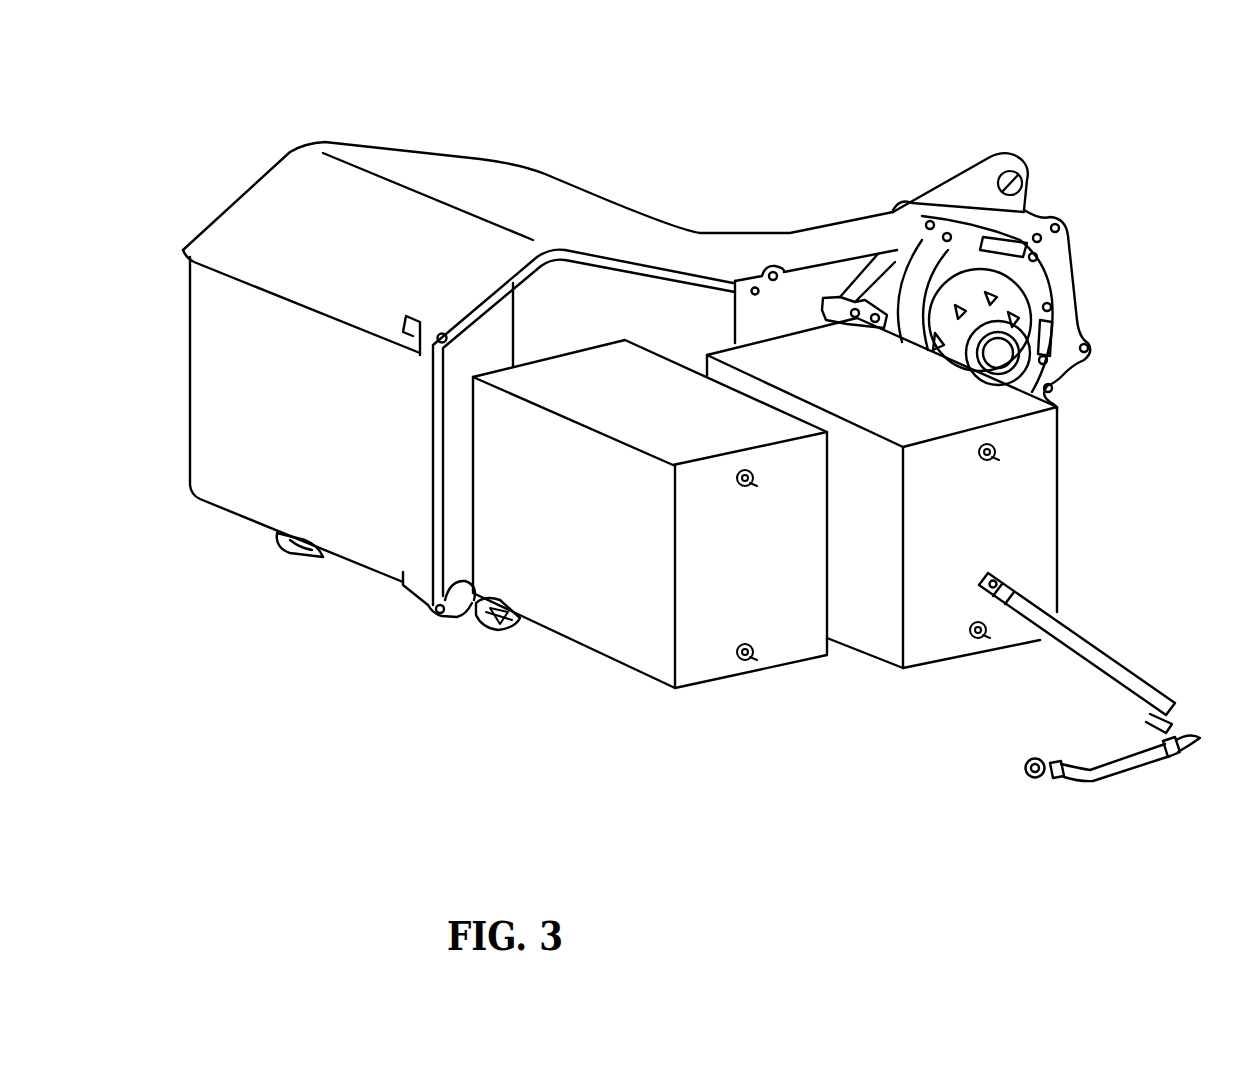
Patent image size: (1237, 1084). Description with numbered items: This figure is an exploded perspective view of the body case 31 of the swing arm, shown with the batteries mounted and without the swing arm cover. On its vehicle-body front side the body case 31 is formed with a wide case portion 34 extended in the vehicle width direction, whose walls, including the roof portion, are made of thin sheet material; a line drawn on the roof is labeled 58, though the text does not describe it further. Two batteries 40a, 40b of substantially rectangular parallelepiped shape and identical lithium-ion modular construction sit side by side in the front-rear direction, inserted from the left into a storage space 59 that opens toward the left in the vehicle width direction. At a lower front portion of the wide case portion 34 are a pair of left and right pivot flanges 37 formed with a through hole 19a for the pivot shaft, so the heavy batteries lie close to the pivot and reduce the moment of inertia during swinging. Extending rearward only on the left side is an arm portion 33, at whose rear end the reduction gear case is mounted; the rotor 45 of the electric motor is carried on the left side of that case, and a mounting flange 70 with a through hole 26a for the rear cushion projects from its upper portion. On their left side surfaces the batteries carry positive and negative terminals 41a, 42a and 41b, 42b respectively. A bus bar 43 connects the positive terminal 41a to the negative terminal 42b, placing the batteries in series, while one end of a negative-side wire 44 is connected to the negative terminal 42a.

The body case 31 is at (738, 150).
The arm portion 33 is at (843, 237).
The wide case portion 34 is at (484, 150).
The pivot flanges 37 is at (283, 545).
The through hole 19a is at (505, 627).
The cover 58 is at (383, 217).
The storage space 59 is at (628, 320).
The mounting flange 70 is at (967, 177).
The through hole 26a is at (1035, 180).
The rotor 45 is at (1012, 296).
The battery 40a is at (593, 623).
The battery 40b is at (873, 630).
The positive terminal 41a is at (737, 480).
The positive terminal 41b is at (992, 463).
The negative terminal 42a is at (736, 660).
The negative terminal 42b is at (980, 640).
The bus bar 43 is at (1085, 640).
The negative-side wire 44 is at (1110, 770).